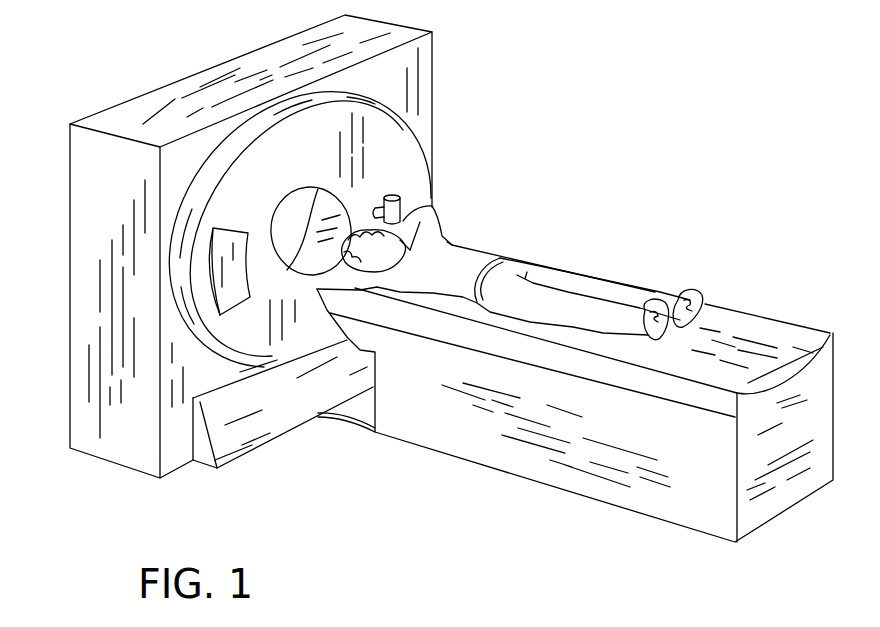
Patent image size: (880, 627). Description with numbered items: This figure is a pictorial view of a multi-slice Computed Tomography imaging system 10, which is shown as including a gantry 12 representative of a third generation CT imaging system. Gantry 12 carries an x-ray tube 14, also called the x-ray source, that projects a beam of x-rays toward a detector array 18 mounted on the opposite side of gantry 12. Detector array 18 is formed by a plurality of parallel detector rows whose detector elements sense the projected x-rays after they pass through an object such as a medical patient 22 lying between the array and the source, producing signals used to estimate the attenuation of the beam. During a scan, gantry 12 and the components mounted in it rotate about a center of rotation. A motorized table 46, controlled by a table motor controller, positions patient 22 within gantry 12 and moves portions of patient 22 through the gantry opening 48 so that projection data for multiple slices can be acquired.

The CT imaging system 10 is at (340, 437).
The gantry 12 is at (242, 133).
The x-ray tube 14 is at (403, 203).
The detector array 18 is at (223, 302).
The medical patient 22 is at (450, 243).
The motorized table 46 is at (465, 438).
The gantry opening 48 is at (383, 200).